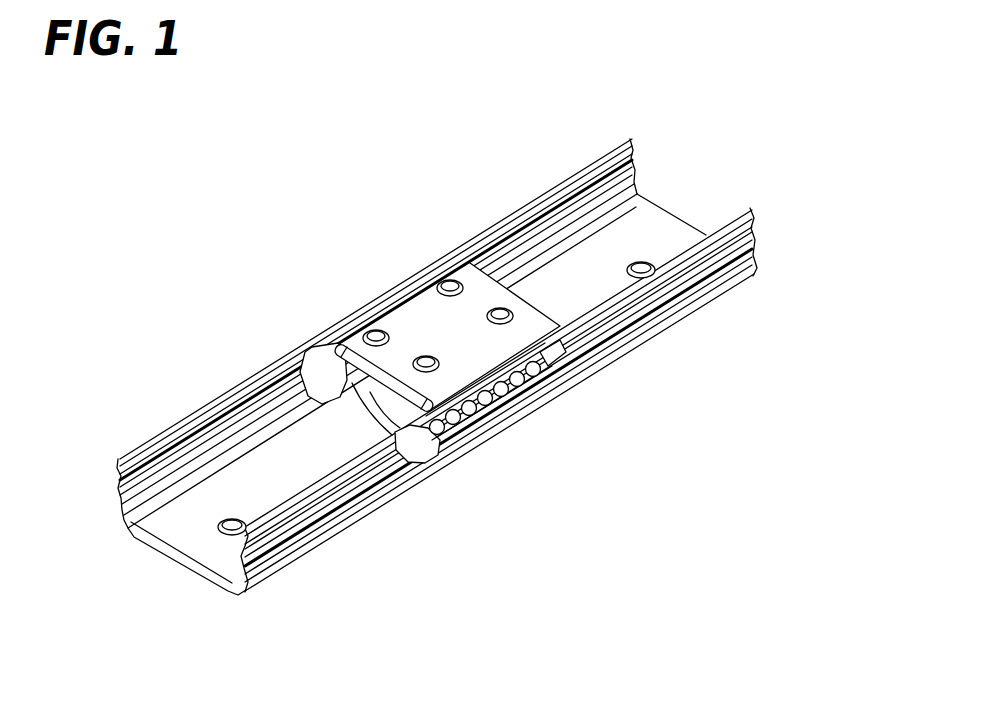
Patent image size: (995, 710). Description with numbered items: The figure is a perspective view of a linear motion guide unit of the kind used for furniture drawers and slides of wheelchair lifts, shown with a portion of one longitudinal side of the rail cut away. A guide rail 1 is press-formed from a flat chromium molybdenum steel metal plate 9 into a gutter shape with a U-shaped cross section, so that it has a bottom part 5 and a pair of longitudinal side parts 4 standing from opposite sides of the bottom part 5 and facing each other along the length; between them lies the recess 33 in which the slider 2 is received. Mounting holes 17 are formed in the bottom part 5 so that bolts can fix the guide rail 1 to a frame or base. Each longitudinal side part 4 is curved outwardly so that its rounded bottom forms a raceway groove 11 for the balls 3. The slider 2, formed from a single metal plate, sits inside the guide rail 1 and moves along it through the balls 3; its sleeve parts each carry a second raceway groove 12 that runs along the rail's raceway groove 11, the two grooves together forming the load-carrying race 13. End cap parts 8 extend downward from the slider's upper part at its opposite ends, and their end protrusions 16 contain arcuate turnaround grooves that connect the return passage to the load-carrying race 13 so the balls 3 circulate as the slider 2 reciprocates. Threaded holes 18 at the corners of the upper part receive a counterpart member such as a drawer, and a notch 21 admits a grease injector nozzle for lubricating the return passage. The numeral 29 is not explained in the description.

The guide rail 1 is at (277, 346).
The metal plate 9 is at (700, 293).
The slider 2 is at (430, 292).
The balls 3 is at (507, 392).
The longitudinal side parts 4 is at (541, 192).
The bottom part 5 is at (180, 533).
The end cap parts 8 is at (377, 402).
The raceway groove 11 is at (170, 464).
The raceway groove 12 is at (510, 392).
The load-carrying race 13 is at (540, 388).
The end protrusions 16 is at (312, 382).
The mounting holes 17 is at (652, 262).
The threaded holes 18 is at (496, 308).
The notch 21 is at (338, 345).
The rail groove 29 is at (400, 285).
The recess 33 is at (624, 243).